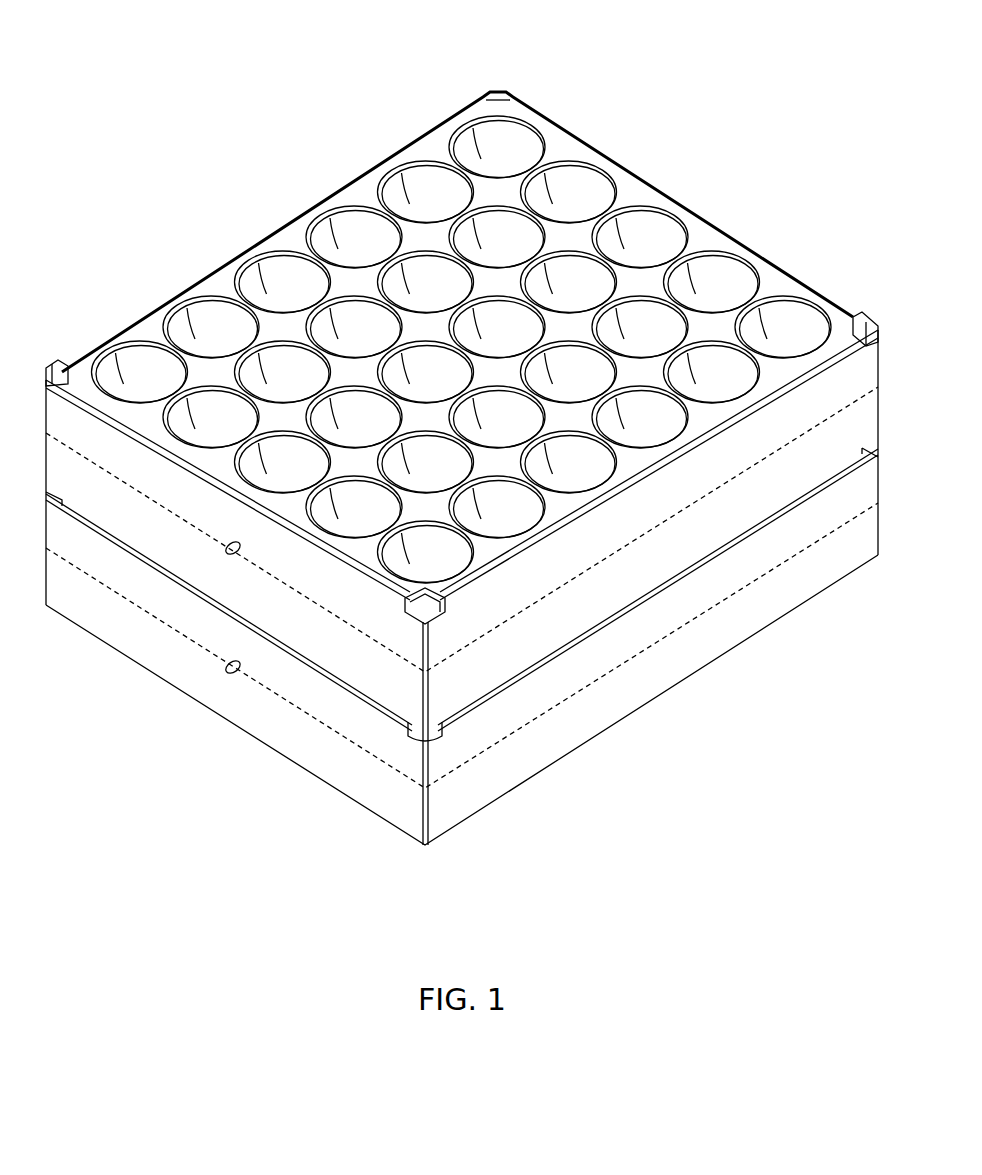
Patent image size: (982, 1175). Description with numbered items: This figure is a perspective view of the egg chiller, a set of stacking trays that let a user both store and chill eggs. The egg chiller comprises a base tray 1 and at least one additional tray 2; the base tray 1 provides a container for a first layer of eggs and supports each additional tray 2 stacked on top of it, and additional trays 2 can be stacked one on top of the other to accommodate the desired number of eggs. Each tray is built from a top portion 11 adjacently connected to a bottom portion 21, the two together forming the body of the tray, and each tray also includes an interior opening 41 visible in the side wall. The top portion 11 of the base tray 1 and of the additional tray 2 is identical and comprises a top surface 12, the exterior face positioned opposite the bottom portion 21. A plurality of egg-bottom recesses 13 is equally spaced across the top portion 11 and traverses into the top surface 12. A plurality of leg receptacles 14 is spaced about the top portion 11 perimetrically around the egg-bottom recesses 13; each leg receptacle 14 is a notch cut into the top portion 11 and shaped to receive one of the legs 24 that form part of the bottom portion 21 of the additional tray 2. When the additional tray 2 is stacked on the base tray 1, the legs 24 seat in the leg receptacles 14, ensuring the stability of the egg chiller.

The base tray 1 is at (470, 892).
The additional tray 2 is at (454, 44).
The top portion 11 is at (647, 523).
The top surface 12 is at (706, 224).
The egg-bottom recesses 13 is at (589, 205).
The leg receptacles 14 is at (497, 93).
The bottom portion 21 is at (655, 576).
The legs 24 is at (64, 498).
The interior opening 41 is at (230, 564).